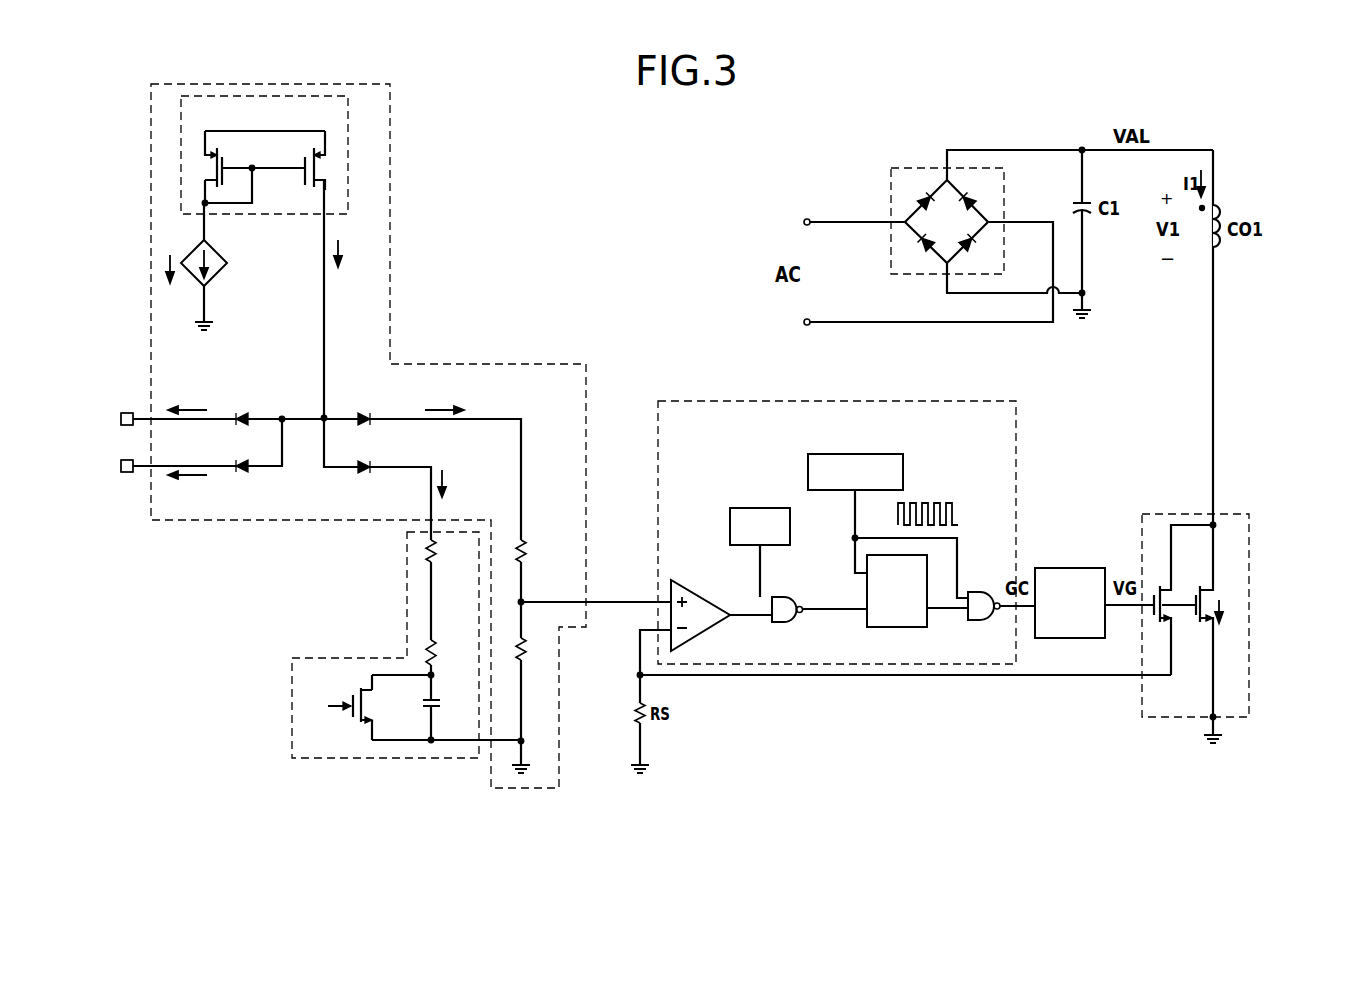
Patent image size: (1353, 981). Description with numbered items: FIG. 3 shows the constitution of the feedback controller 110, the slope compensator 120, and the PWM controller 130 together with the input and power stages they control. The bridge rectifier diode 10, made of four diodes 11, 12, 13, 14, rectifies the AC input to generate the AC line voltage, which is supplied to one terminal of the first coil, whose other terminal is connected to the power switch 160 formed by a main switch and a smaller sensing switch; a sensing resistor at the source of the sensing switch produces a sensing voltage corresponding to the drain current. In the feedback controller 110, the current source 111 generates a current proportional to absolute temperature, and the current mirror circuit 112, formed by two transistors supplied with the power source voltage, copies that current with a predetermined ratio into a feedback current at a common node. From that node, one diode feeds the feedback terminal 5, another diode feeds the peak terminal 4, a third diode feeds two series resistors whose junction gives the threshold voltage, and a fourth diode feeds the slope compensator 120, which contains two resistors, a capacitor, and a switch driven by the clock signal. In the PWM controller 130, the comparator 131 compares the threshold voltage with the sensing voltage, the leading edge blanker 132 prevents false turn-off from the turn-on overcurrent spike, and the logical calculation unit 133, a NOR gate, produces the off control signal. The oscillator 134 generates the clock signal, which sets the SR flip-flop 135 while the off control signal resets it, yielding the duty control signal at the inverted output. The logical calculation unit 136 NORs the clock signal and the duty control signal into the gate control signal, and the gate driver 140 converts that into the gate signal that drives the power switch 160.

The peak terminal 4 is at (127, 472).
The feedback terminal 5 is at (127, 413).
The bridge rectifier diode 10 is at (922, 168).
The diode 11 is at (922, 192).
The diode 12 is at (922, 251).
The diode 13 is at (973, 192).
The diode 14 is at (973, 251).
The feedback controller 110 is at (276, 520).
The current source 111 is at (224, 280).
The current mirror circuit 112 is at (277, 214).
The slope compensator 120 is at (322, 658).
The PWM controller 130 is at (838, 401).
The comparator 131 is at (702, 592).
The LEB (leading edge blanker) 132 is at (730, 524).
The logical calculation unit 133 is at (783, 597).
The oscillator 134 is at (855, 454).
The SR flip-flop 135 is at (895, 627).
The logical calculation unit 136 is at (978, 592).
The gate driver 140 is at (1068, 568).
The power switch 160 is at (1167, 717).